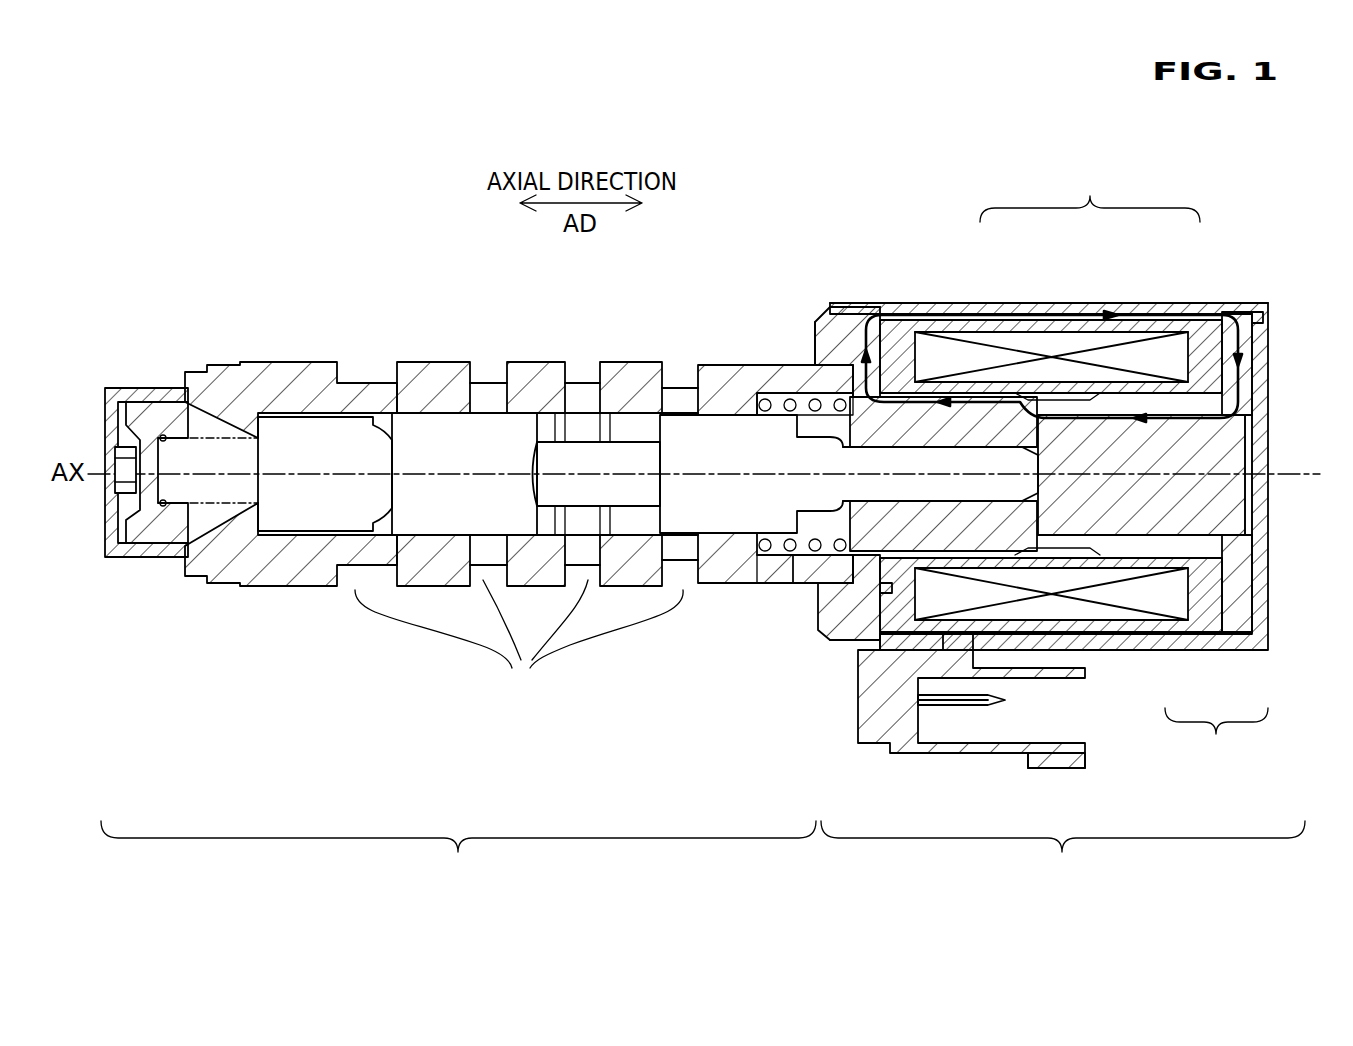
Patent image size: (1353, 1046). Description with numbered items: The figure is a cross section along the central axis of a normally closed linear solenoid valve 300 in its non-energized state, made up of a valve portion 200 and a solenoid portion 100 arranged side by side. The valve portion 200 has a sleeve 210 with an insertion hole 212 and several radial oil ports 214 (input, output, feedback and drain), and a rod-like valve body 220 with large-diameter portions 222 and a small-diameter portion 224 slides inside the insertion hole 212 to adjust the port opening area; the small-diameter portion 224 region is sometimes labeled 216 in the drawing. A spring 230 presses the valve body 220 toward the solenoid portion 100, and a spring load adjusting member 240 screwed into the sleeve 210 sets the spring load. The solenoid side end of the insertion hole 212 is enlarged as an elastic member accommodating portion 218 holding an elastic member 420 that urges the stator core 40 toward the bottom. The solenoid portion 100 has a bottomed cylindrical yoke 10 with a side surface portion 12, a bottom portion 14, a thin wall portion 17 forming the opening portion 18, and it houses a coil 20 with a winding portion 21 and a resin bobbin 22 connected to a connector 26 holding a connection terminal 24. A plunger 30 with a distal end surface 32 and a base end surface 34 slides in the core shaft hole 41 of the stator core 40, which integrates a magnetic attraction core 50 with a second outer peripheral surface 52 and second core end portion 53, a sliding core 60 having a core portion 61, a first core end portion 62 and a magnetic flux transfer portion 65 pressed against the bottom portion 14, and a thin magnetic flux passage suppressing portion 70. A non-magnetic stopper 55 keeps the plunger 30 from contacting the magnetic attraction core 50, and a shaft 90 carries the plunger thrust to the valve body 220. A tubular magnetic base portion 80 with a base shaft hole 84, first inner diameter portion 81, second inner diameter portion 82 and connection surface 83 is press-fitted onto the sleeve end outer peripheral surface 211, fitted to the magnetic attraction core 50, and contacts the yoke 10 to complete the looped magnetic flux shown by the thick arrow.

The solenoid valve 300 is at (274, 165).
The valve portion 200 is at (458, 853).
The solenoid portion 100 is at (1063, 854).
The yoke 10 is at (1296, 284).
The side surface portion 12 is at (940, 312).
The bottom portion 14 is at (1266, 392).
The thin wall portion 17 is at (845, 320).
The opening portion 18 is at (820, 320).
The coil 20 is at (1216, 734).
The winding portion 21 is at (1133, 600).
The bobbin 22 is at (1203, 598).
The connection terminal 24 is at (977, 705).
The connector 26 is at (1103, 775).
The plunger 30 is at (1216, 506).
The distal end surface 32 is at (1030, 425).
The base end surface 34 is at (1252, 490).
The stator core 40 is at (1090, 193).
The core shaft hole 41 is at (1192, 560).
The magnetic attraction core 50 is at (985, 395).
The second outer peripheral surface 52 is at (897, 368).
The second core end portion 53 is at (836, 400).
The stopper 55 is at (1030, 525).
The sliding core 60 is at (1212, 380).
The core portion 61 is at (1232, 455).
The first core end portion 62 is at (1250, 430).
The magnetic flux transfer portion 65 is at (1250, 340).
The magnetic flux passage suppressing portion 70 is at (1058, 380).
The base portion 80 is at (795, 731).
The first inner diameter portion 81 is at (800, 590).
The second inner diameter portion 82 is at (866, 560).
The connection surface 83 is at (845, 612).
The base shaft hole 84 is at (820, 628).
The shaft 90 is at (812, 557).
The sleeve 210 is at (480, 447).
The end outer peripheral surface 211 is at (880, 484).
The insertion hole 212 is at (296, 440).
The oil ports 214 is at (519, 641).
The first land 216 is at (420, 385).
The elastic member accommodating portion 218 is at (792, 393).
The valve body 220 is at (682, 452).
The large-diameter portions 222 is at (540, 395).
The small-diameter portion 224 is at (582, 455).
The spring 230 is at (198, 432).
The spring load adjusting member 240 is at (142, 422).
The elastic member 420 is at (775, 570).